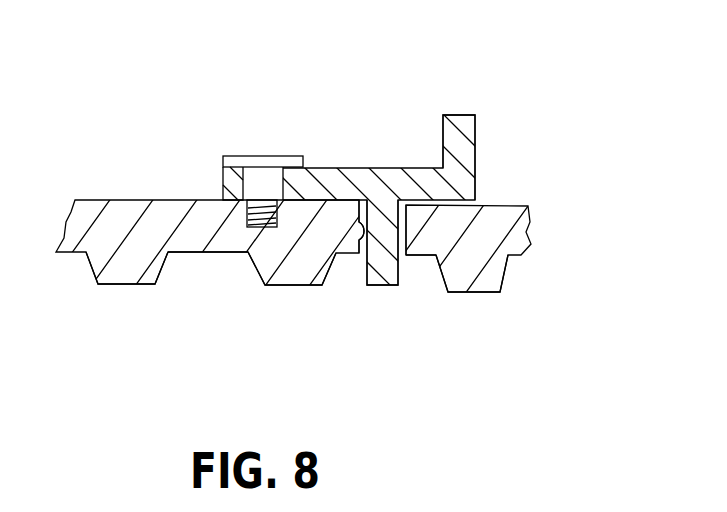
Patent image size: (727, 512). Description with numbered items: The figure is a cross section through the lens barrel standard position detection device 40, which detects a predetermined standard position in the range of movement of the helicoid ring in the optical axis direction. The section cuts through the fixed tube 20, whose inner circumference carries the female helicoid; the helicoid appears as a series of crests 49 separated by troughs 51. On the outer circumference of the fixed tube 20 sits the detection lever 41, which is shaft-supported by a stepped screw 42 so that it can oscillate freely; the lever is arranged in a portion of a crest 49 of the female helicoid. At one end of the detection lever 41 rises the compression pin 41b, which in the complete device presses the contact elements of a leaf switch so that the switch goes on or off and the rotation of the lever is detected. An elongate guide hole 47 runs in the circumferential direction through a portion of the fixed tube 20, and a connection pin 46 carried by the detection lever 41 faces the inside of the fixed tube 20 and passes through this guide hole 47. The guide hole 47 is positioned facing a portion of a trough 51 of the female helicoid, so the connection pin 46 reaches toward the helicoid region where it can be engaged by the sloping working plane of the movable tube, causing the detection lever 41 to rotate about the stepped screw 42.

The lens barrel standard position detection device 40 is at (268, 106).
The detection lever 41 is at (325, 172).
The compression pin 41b is at (470, 137).
The stepped screw 42 is at (224, 155).
The fixed tube 20 is at (132, 200).
The crest 49 is at (123, 284).
The trough 51 is at (200, 273).
The guide hole 47 is at (361, 226).
The connection pin 46 is at (387, 286).